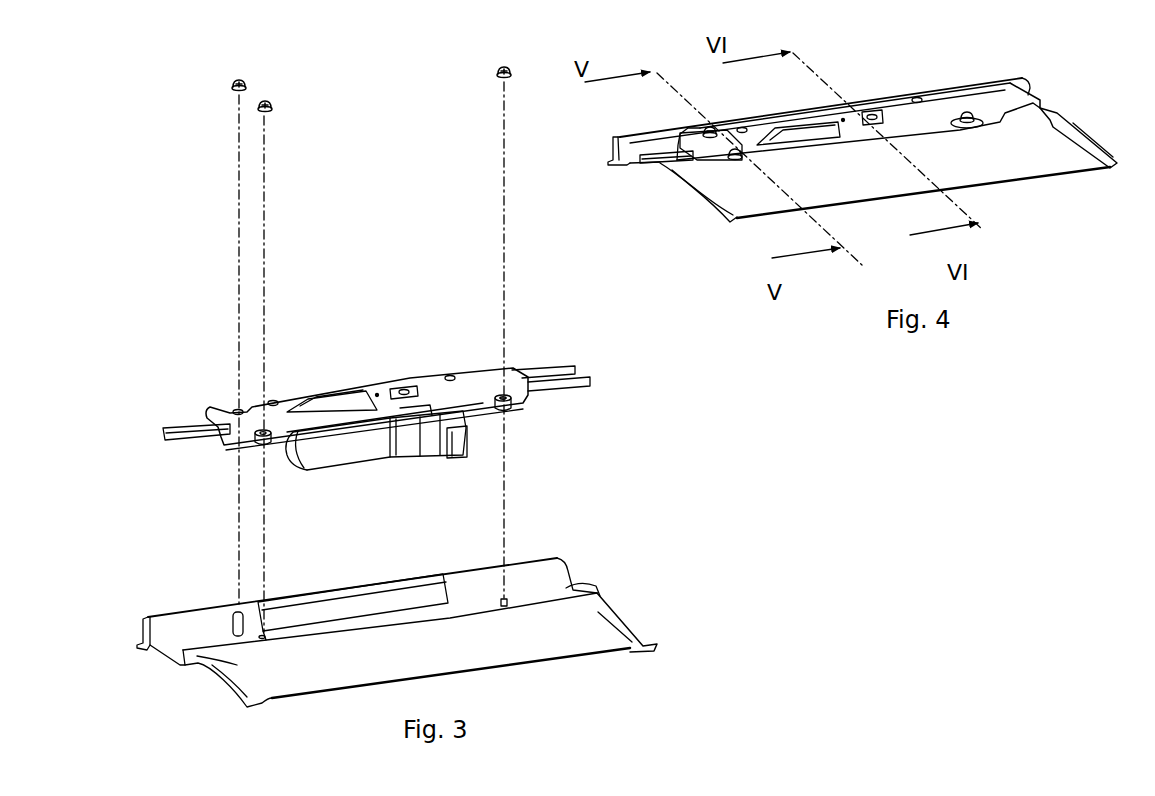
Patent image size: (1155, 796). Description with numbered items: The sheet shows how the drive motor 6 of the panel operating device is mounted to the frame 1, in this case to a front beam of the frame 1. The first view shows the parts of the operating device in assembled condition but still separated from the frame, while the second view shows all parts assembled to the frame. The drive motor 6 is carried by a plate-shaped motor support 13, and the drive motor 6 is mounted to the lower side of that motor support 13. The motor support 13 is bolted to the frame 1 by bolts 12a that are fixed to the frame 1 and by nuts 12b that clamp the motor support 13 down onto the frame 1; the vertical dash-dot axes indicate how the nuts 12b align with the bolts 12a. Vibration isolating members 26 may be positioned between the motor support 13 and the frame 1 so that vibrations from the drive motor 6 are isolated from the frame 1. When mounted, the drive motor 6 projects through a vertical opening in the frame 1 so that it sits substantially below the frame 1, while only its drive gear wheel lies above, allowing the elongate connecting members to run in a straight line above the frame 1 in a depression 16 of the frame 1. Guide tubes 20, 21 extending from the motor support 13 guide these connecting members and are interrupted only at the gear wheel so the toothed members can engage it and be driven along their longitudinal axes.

In FIG. 3, the frame 1 is at (642, 637).
In FIG. 4, the frame 1 is at (1028, 174).
In FIG. 3, the drive motor 6 is at (300, 450).
In FIG. 3, the bolts 12a is at (510, 602).
In FIG. 4, the bolts 12a is at (990, 118).
In FIG. 3, the nuts 12b is at (258, 112).
In FIG. 4, the nuts 12b is at (710, 132).
In FIG. 3, the motor support 13 is at (513, 370).
In FIG. 4, the motor support 13 is at (928, 113).
In FIG. 3, the depression 16 is at (594, 590).
In FIG. 3, the guide tube 20 is at (590, 380).
In FIG. 3, the guide tube 21 is at (578, 368).
In FIG. 3, the vibration isolating members 26 is at (512, 412).